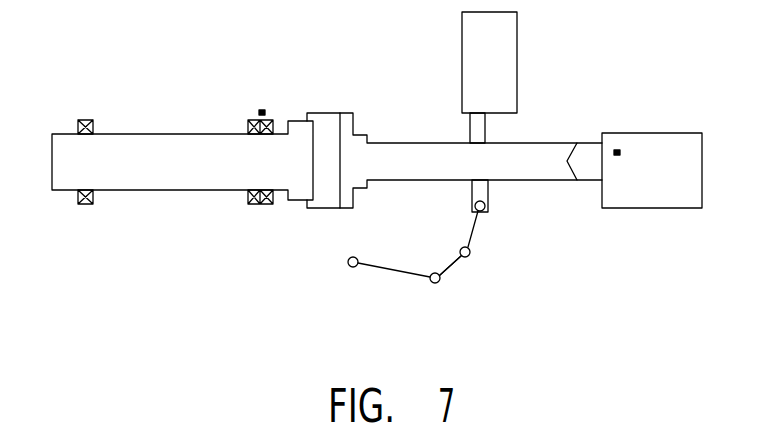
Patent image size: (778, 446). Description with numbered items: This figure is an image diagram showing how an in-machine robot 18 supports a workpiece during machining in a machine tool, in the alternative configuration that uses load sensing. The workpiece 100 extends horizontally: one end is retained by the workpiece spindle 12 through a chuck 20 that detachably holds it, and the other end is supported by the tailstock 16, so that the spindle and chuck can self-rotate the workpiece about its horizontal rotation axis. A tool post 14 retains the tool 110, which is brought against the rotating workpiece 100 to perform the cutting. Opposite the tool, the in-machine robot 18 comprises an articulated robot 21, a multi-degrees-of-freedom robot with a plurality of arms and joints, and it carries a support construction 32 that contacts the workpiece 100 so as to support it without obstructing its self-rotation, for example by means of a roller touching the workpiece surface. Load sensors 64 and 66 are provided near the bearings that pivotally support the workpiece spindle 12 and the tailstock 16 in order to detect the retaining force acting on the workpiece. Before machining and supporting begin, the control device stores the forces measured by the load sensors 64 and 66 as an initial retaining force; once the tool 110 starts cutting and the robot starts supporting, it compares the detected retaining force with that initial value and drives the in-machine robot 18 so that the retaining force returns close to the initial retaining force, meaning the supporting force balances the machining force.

The workpiece spindle 12 is at (167, 184).
The tool post 14 is at (462, 41).
The tailstock 16 is at (658, 196).
The in-machine robot 18 is at (419, 297).
The chuck 20 is at (345, 113).
The articulated robot 21 is at (447, 270).
The support construction 32 is at (488, 196).
The load sensor 64 is at (260, 110).
The load sensor 66 is at (619, 150).
The workpiece 100 is at (376, 142).
The tool 110 is at (472, 142).